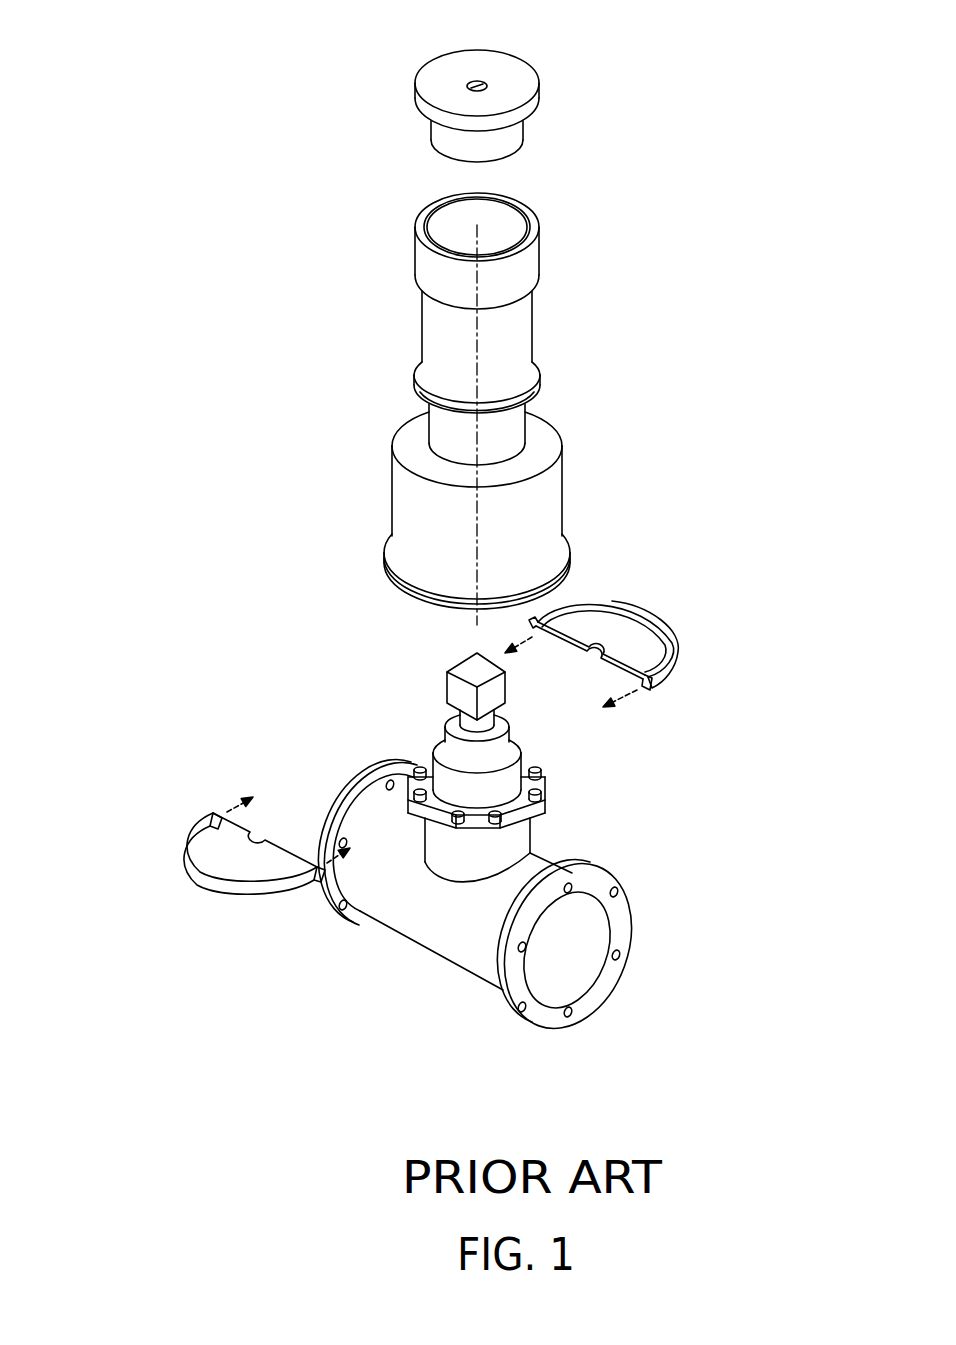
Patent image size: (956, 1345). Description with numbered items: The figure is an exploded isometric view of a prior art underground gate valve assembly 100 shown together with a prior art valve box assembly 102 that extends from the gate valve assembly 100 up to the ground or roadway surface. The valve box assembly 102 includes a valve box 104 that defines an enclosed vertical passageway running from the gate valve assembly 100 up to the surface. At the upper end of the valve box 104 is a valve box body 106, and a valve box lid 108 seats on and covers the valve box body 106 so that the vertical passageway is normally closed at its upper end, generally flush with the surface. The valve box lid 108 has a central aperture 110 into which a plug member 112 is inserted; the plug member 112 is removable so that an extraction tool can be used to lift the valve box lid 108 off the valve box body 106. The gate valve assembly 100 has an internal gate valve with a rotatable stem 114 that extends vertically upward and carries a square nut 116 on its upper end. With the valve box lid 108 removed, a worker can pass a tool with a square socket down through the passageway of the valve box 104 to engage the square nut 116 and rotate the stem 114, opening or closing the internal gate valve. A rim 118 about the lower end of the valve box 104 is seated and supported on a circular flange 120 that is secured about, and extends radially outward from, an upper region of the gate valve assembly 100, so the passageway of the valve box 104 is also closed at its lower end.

The underground gate valve assembly 100 is at (652, 790).
The valve box assembly 102 is at (643, 140).
The valve box 104 is at (347, 242).
The valve box body 106 is at (540, 230).
The valve box lid 108 is at (541, 91).
The central aperture 110 is at (488, 81).
The plug member 112 is at (465, 81).
The rotatable stem 114 is at (493, 722).
The square nut 116 is at (445, 683).
The rim 118 is at (570, 560).
The circular flange 120 is at (648, 607).